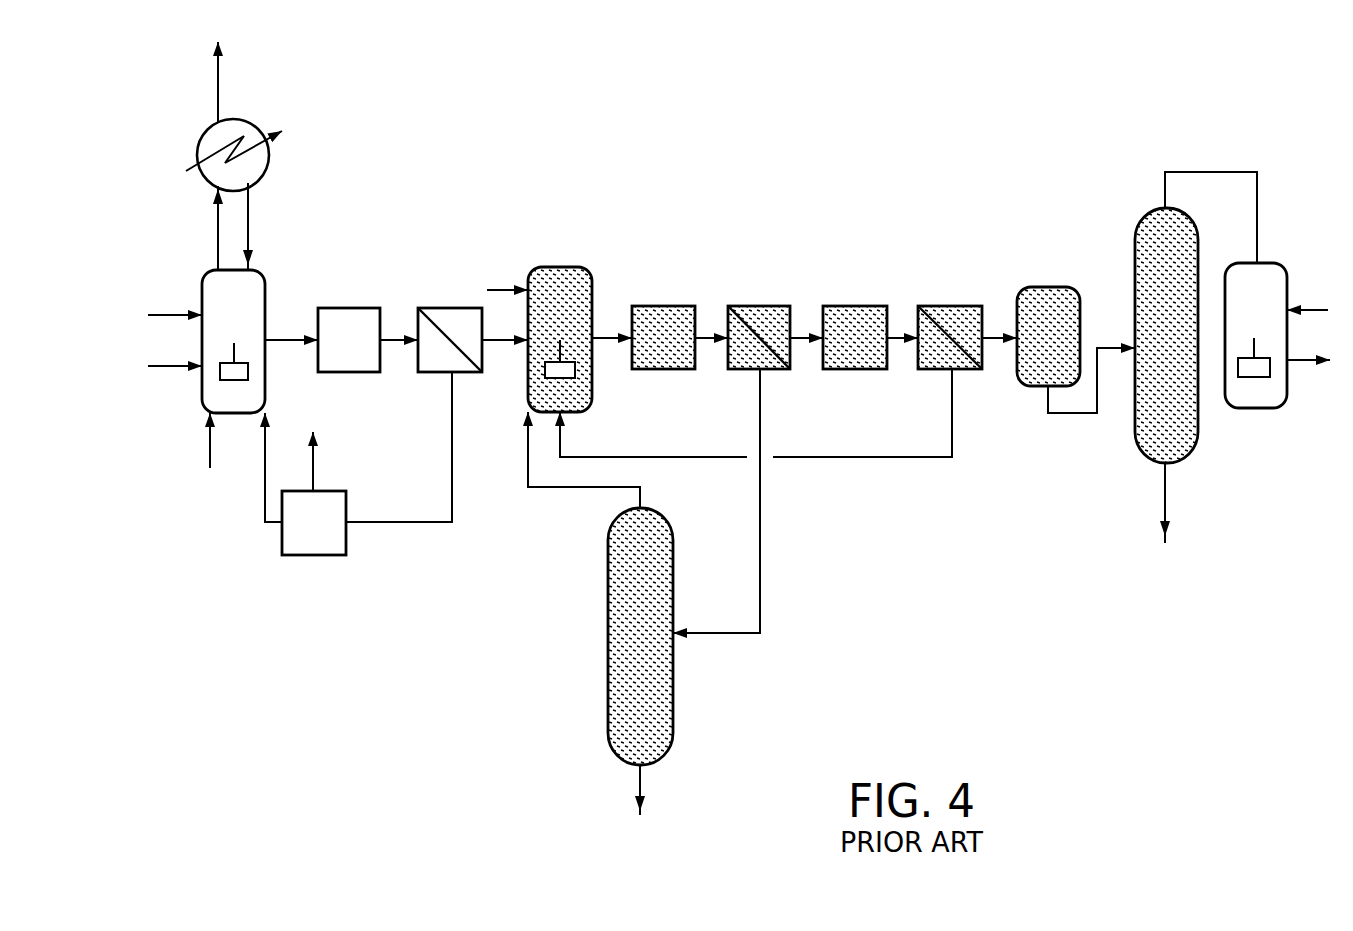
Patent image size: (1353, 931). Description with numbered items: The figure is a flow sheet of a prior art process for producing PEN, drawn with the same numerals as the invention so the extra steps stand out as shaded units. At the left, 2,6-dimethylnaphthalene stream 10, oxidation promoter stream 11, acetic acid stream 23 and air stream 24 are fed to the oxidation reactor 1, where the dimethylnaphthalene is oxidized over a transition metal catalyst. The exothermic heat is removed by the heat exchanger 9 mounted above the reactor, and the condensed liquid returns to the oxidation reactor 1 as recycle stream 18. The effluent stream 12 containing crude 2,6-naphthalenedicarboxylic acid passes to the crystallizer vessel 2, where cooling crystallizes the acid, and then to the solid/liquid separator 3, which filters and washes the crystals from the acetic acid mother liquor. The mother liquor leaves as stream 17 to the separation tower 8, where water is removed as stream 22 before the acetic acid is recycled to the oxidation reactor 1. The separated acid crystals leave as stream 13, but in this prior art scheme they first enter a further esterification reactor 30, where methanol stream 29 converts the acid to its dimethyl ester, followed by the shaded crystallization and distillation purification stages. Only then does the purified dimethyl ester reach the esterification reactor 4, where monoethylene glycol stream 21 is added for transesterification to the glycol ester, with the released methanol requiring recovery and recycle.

The oxidation reactor 1 is at (242, 327).
The crystallizer vessel 2 is at (340, 357).
The solid/liquid separator 3 is at (454, 338).
The esterification reactor 4 is at (1248, 321).
The separation tower 8 is at (304, 538).
The heat exchanger 9 is at (205, 141).
The 2,6-dimethylnaphthalene stream 10 is at (170, 313).
The oxidation promoter stream 11 is at (165, 367).
The effluent stream 12 is at (275, 343).
The separated acid crystals stream 13 is at (490, 343).
The mother liquor stream 17 is at (410, 522).
The condensed liquid recycle stream 18 is at (252, 216).
The monoethylene glycol stream 21 is at (1315, 308).
The water stream 22 is at (313, 478).
The acetic acid stream 23 is at (265, 517).
The air stream 24 is at (210, 460).
The methanol stream 29 is at (497, 287).
The further esterification reactor 30 is at (594, 396).